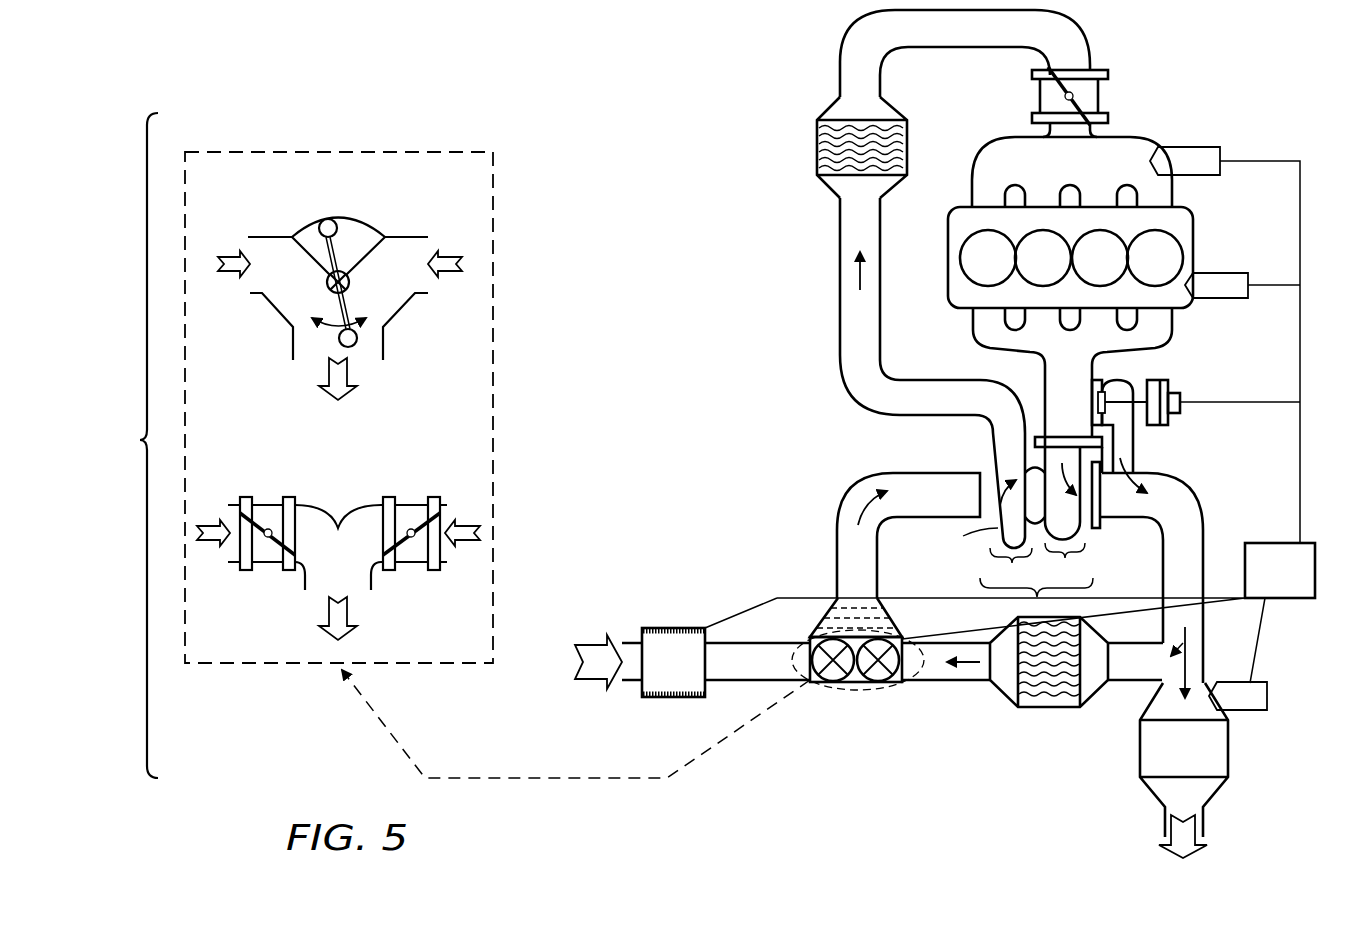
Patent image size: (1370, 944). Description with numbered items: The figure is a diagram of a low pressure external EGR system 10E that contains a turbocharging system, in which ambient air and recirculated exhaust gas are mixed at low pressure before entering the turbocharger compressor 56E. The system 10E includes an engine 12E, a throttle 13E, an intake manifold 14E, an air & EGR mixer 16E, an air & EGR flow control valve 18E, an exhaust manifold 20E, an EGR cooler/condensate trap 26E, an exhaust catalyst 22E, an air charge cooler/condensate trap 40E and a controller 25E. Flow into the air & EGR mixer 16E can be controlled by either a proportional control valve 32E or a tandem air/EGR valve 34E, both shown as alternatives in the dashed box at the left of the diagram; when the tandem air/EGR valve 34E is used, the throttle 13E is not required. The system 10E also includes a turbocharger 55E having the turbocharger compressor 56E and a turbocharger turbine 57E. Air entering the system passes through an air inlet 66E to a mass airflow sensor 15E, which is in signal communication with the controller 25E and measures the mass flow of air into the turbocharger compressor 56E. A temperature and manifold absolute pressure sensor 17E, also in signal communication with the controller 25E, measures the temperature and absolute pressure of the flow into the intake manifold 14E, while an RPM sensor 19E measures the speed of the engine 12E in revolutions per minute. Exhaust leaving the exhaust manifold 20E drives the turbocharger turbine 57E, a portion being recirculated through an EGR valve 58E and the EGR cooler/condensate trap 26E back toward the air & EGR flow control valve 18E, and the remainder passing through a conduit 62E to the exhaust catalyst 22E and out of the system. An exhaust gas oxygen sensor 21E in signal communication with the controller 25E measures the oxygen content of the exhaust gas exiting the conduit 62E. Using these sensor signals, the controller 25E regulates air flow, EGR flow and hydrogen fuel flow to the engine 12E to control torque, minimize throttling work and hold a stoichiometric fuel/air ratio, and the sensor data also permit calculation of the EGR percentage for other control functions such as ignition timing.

The system 10E is at (453, 445).
The engine 12E is at (960, 303).
The throttle 13E is at (1105, 100).
The intake manifold 14E is at (987, 158).
The mass airflow sensor 15E is at (677, 628).
The air & EGR mixer 16E is at (891, 619).
The temperature and manifold absolute pressure sensor 17E is at (1197, 147).
The air & EGR flow control valve 18E is at (884, 693).
The RPM sensor 19E is at (1207, 273).
The exhaust manifold 20E is at (983, 343).
The exhaust gas oxygen sensor 21E is at (1240, 711).
The exhaust catalyst 22E is at (1207, 787).
The controller 25E is at (1287, 600).
The EGR cooler/condensate trap 26E is at (1054, 708).
The proportional control valve 32E is at (348, 217).
The tandem air/EGR valve 34E is at (338, 512).
The air charge cooler/condensate trap 40E is at (820, 127).
The turbocharger 55E is at (1040, 598).
The turbocharger compressor 56E is at (997, 508).
The turbocharger turbine 57E is at (1071, 515).
The EGR valve 58E is at (1183, 396).
The conduit 62E is at (1207, 673).
The air inlet 66E is at (622, 682).